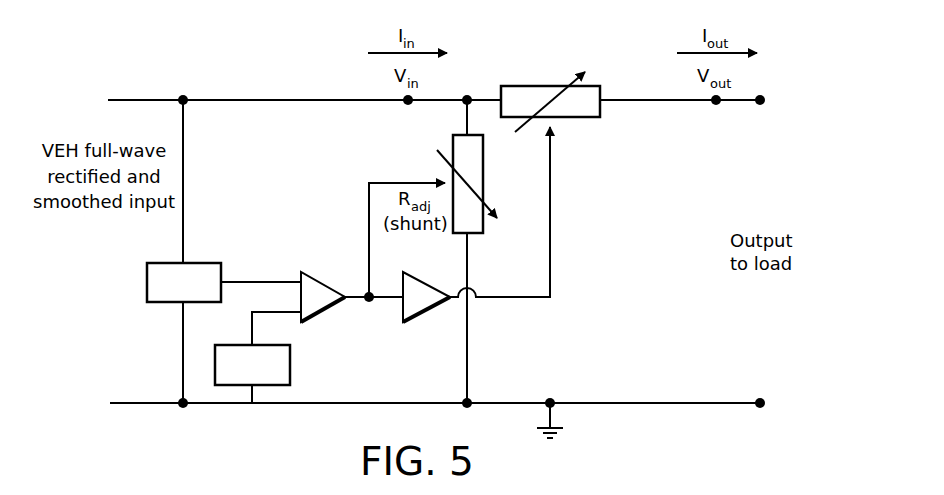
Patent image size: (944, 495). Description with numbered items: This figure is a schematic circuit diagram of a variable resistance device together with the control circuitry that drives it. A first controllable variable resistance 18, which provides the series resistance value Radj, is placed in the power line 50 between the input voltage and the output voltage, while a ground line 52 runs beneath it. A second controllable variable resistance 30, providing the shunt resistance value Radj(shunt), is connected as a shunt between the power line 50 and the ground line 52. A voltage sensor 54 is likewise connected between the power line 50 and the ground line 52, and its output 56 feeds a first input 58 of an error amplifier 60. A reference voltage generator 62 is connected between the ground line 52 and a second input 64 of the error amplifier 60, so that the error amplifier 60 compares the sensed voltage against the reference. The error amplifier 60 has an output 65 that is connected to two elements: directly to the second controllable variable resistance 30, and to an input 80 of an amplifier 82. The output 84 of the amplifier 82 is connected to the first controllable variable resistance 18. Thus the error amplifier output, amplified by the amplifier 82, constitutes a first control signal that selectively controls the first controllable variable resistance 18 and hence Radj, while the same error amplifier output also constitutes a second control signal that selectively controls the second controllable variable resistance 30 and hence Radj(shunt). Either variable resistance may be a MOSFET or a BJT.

The first controllable variable resistance 18 is at (580, 117).
The second controllable variable resistance 30 is at (483, 160).
The power line 50 is at (636, 100).
The ground line 52 is at (646, 403).
The voltage sensor 54 is at (147, 277).
The output of the voltage sensor 56 is at (223, 279).
The first input of the error amplifier 58 is at (300, 274).
The error amplifier 60 is at (326, 284).
The reference voltage generator 62 is at (290, 372).
The second input of the error amplifier 64 is at (303, 318).
The output of the error amplifier 65 is at (347, 300).
The input of the amplifier 80 is at (403, 288).
The amplifier 82 is at (422, 315).
The output of the amplifier 84 is at (446, 290).